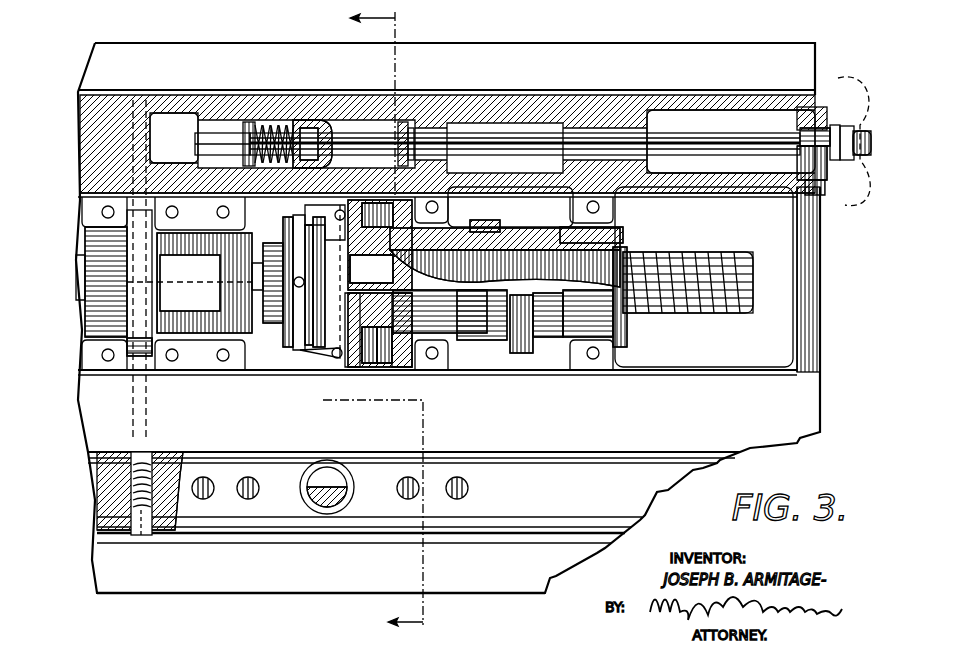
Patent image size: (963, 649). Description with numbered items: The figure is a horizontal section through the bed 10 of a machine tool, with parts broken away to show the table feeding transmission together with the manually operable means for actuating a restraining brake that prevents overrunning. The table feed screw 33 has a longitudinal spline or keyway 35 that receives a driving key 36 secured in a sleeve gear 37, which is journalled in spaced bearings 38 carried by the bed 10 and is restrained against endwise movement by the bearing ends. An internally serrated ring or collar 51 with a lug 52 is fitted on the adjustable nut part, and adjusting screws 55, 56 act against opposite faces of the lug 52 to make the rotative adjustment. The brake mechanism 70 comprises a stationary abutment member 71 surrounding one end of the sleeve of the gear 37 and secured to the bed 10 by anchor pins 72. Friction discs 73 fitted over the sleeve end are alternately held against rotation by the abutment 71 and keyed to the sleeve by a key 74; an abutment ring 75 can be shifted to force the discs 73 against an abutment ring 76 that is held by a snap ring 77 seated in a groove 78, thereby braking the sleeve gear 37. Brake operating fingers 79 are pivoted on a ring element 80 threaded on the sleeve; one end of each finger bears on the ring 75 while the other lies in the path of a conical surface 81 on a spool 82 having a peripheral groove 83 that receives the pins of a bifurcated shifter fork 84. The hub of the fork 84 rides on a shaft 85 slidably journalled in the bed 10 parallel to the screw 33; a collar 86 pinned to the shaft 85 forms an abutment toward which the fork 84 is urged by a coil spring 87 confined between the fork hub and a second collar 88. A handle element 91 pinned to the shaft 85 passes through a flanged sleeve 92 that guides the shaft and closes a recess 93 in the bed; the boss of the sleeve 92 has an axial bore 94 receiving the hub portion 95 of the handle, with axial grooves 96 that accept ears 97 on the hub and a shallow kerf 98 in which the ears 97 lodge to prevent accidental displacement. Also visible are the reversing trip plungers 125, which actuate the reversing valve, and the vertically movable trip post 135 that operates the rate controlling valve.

The bed 10 is at (805, 425).
The table feed screw 33 is at (745, 255).
The longitudinal spline or keyway 35 is at (620, 250).
The driving key 36 is at (556, 230).
The sleeve gear 37 is at (275, 243).
The bearings 38 is at (485, 220).
The internally serrated ring or collar 51 is at (138, 283).
The lug 52 is at (127, 330).
The adjusting screw 55 is at (174, 138).
The adjusting screw 56 is at (150, 352).
The brake mechanism 70 is at (330, 210).
The stationary abutment member 71 is at (410, 368).
The anchor pins 72 is at (412, 225).
The friction discs 73 is at (380, 362).
The key 74 is at (365, 358).
The abutment ring 75 is at (348, 350).
The abutment ring 76 is at (393, 362).
The snap ring 77 is at (420, 300).
The groove 78 is at (465, 300).
The brake operating fingers 79 is at (298, 215).
The ring element 80 is at (341, 210).
The conical surface 81 is at (314, 347).
The spool 82 is at (284, 312).
The peripheral groove 83 is at (305, 345).
The bifurcated shifter fork 84 is at (315, 120).
The shaft 85 is at (530, 135).
The collar 86 is at (402, 120).
The coil spring 87 is at (272, 120).
The collar 88 is at (248, 128).
The handle element 91 is at (862, 126).
The flanged sleeve 92 is at (830, 105).
The recess 93 is at (703, 120).
The axial bore 94 is at (800, 140).
The hub portion 95 is at (852, 132).
The axial grooves 96 is at (830, 130).
The ears 97 is at (828, 186).
The shallow kerf 98 is at (797, 163).
The reversing trip plungers 125 is at (415, 480).
The trip post 135 is at (300, 483).